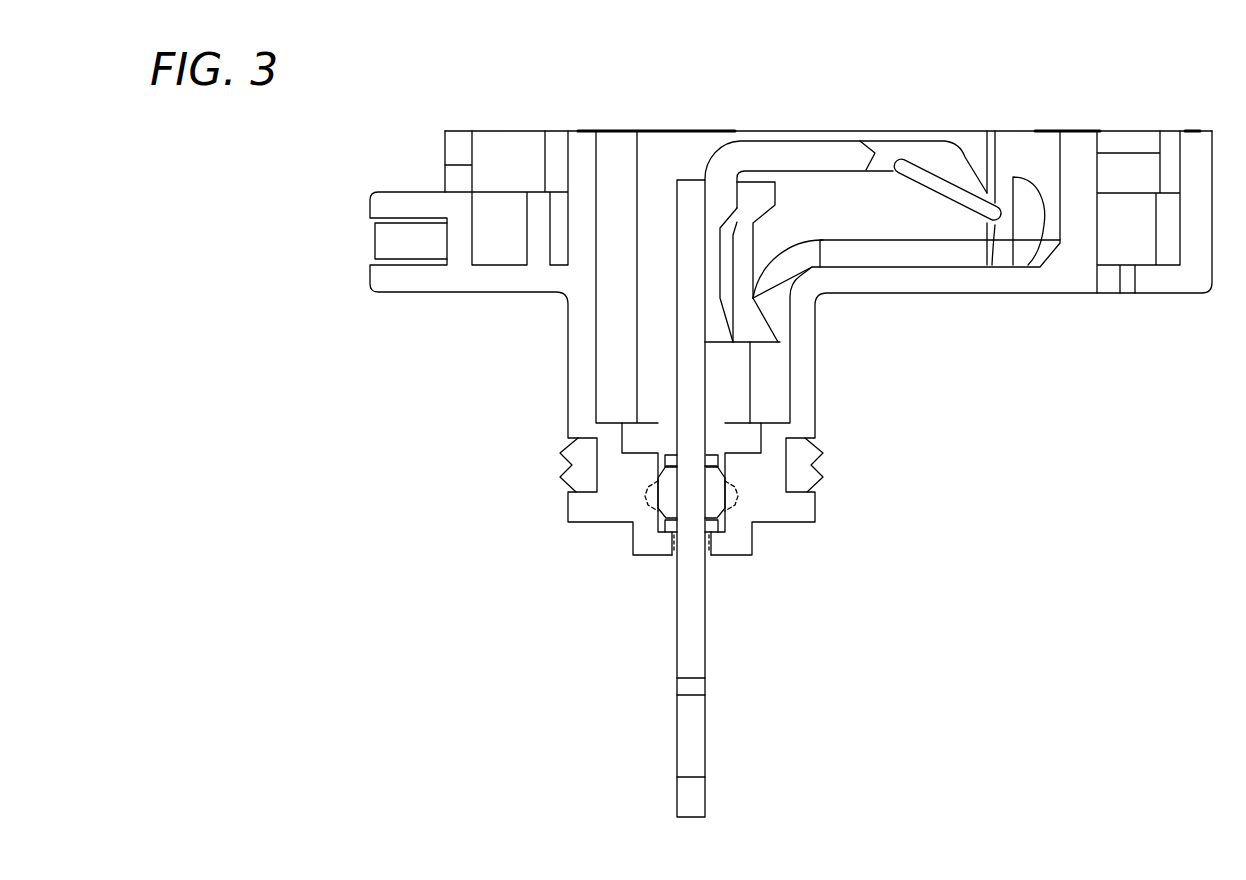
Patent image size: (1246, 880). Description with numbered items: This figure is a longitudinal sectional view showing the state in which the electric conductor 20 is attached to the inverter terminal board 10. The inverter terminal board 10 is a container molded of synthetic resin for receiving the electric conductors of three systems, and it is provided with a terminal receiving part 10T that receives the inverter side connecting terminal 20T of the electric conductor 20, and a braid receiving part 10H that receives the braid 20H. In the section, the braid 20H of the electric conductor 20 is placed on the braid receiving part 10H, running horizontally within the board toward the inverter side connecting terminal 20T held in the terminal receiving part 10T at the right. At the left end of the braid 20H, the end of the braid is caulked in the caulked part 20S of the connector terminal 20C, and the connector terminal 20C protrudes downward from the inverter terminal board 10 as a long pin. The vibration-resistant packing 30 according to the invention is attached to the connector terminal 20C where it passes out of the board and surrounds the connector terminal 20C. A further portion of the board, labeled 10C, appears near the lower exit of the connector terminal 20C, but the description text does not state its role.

The inverter terminal board 10 is at (1193, 130).
The braid receiving part 10H is at (836, 190).
The terminal receiving part 10T is at (1125, 215).
The housing connecting portion 10C is at (672, 560).
The electric conductor 20 is at (853, 148).
The caulked part 20S is at (755, 192).
The braid 20H is at (787, 148).
The inverter side connecting terminal 20T is at (1127, 172).
The connector terminal 20C is at (697, 637).
The vibration-resistant packing 30 is at (725, 502).